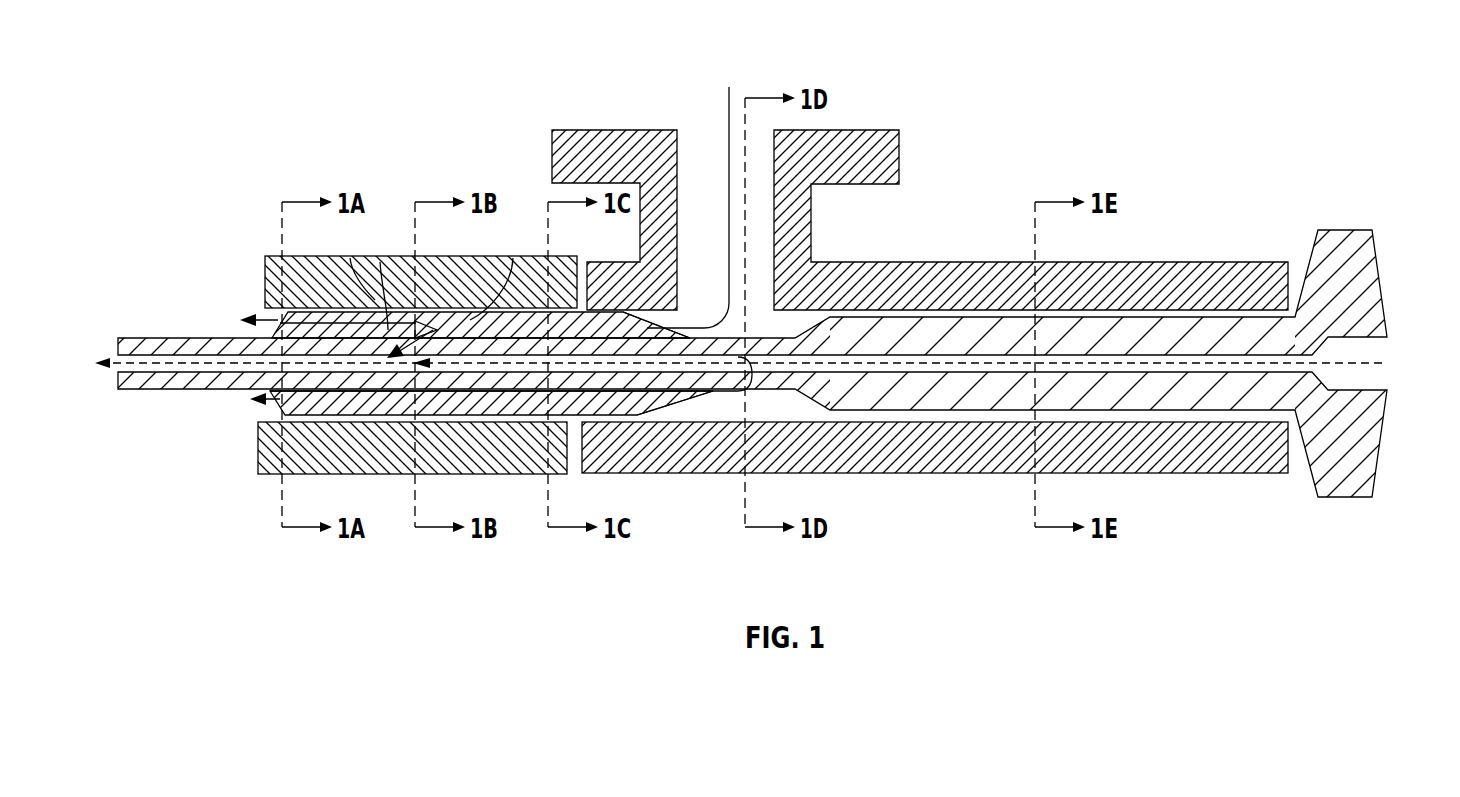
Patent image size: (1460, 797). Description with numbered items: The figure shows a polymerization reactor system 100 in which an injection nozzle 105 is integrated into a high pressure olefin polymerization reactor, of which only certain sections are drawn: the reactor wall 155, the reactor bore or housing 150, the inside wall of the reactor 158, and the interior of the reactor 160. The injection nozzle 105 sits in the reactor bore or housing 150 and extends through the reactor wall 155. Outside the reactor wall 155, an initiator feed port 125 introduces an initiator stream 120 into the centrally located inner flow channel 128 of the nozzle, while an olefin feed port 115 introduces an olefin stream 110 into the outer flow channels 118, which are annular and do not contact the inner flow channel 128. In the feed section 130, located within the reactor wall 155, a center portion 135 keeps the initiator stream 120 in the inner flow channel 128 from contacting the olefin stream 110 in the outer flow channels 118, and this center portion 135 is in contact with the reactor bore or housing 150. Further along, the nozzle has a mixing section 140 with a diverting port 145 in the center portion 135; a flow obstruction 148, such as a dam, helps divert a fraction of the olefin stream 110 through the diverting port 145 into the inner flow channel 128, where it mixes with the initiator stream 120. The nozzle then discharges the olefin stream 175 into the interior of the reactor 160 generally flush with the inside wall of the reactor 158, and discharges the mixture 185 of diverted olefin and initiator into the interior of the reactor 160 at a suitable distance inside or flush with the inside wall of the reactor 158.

The polymerization reactor system 100 is at (822, 34).
The injection nozzle 105 is at (513, 258).
The olefin stream 110 is at (728, 93).
The olefin feed port 115 is at (697, 152).
The outer flow channels 118 is at (650, 323).
The initiator stream 120 is at (783, 348).
The initiator feed port 125 is at (1367, 372).
The inner flow channel 128 is at (1110, 357).
The feed section 130 is at (567, 381).
The center portion 135 is at (560, 382).
The mixing section 140 is at (413, 387).
The diverting port 145 is at (395, 355).
The flow obstruction 148 is at (350, 258).
The reactor bore or housing 150 is at (285, 422).
The reactor wall 155 is at (380, 262).
The inside wall of the reactor 158 is at (265, 279).
The interior of the reactor 160 is at (189, 469).
The discharged olefin stream 175 is at (278, 320).
The mixture 185 is at (116, 374).